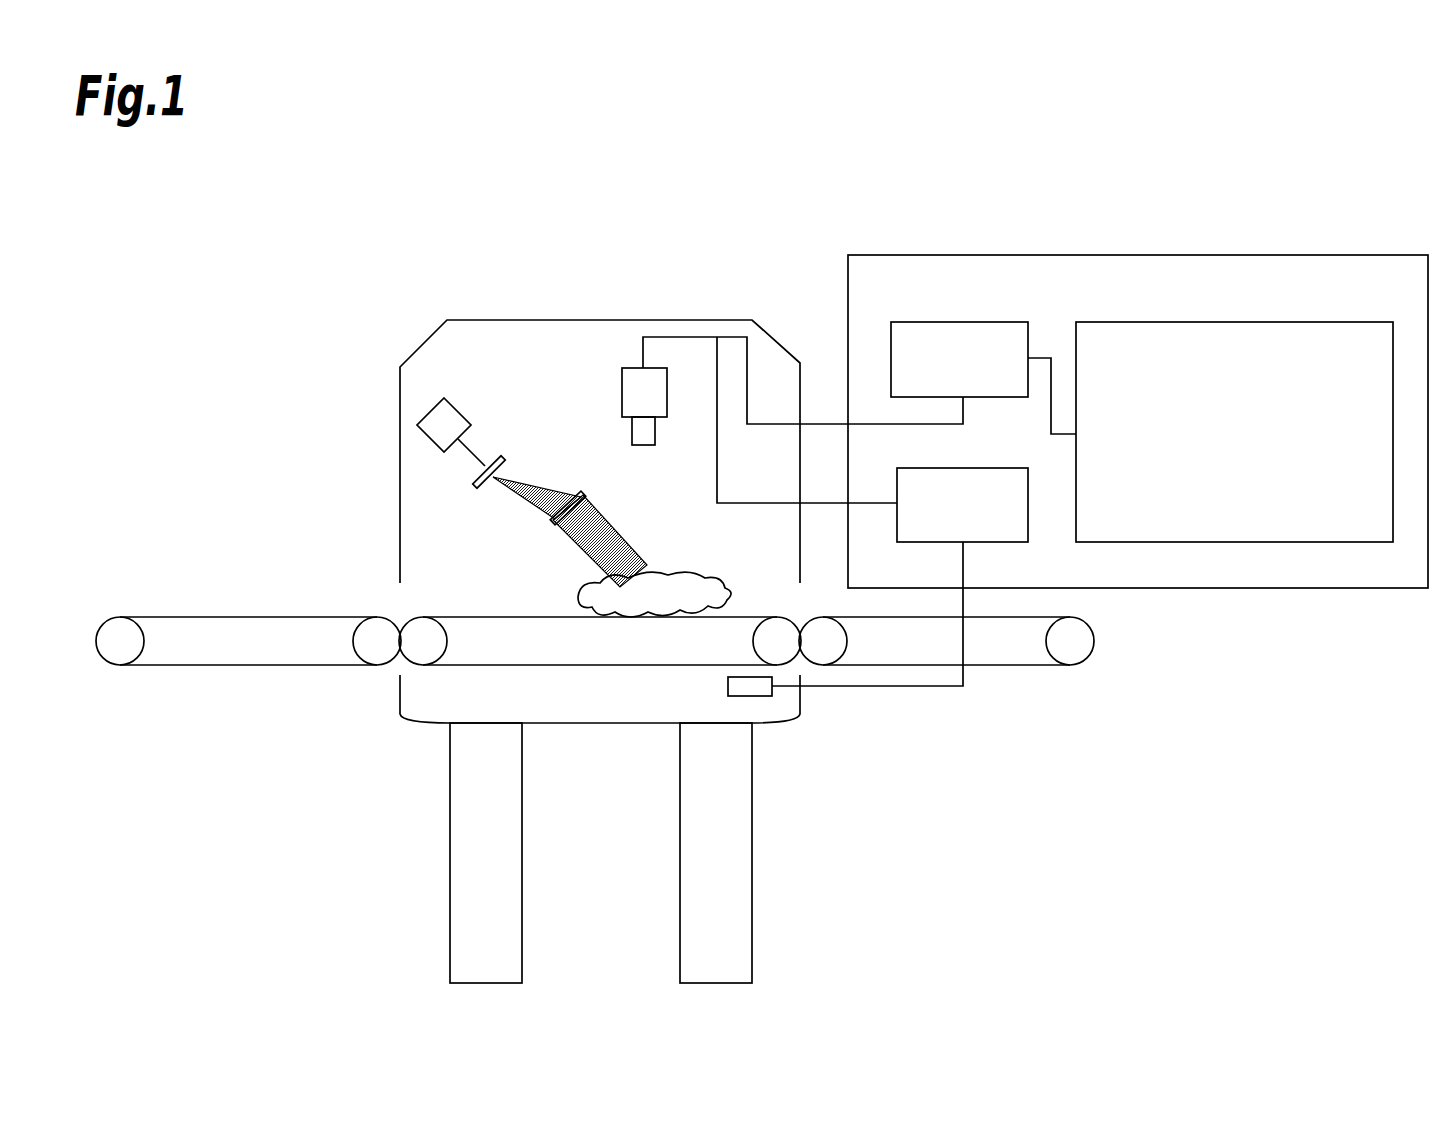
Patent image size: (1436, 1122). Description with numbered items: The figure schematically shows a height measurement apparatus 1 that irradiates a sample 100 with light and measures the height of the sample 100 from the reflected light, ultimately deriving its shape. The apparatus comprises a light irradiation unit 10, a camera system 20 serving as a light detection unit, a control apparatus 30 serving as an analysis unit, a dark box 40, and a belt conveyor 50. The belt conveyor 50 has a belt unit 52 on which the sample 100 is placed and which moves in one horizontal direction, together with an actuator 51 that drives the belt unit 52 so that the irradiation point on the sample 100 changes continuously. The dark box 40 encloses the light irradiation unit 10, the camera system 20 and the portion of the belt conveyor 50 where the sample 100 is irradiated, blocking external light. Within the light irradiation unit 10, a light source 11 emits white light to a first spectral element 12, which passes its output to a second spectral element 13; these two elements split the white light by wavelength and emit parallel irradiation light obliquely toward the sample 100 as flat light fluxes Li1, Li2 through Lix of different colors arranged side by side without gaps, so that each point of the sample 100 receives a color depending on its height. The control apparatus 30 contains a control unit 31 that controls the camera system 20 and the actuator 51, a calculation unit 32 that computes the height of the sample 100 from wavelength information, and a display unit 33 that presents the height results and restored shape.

The height measurement apparatus 1 is at (384, 252).
The light irradiation unit 10 is at (438, 475).
The light source 11 is at (447, 405).
The spectral element 12 is at (494, 461).
The spectral element 13 is at (563, 496).
The camera system 20 is at (609, 391).
The control apparatus 30 is at (1095, 253).
The control unit 31 is at (985, 468).
The calculation unit 32 is at (989, 322).
The display unit 33 is at (1277, 322).
The dark box 40 is at (611, 318).
The belt conveyor 50 is at (595, 733).
The actuator 51 is at (757, 697).
The belt unit 52 is at (462, 667).
The sample 100 is at (690, 585).
The flat light flux Li1 is at (570, 532).
The flat light flux Li2 is at (580, 544).
The flat light flux Lix is at (609, 522).